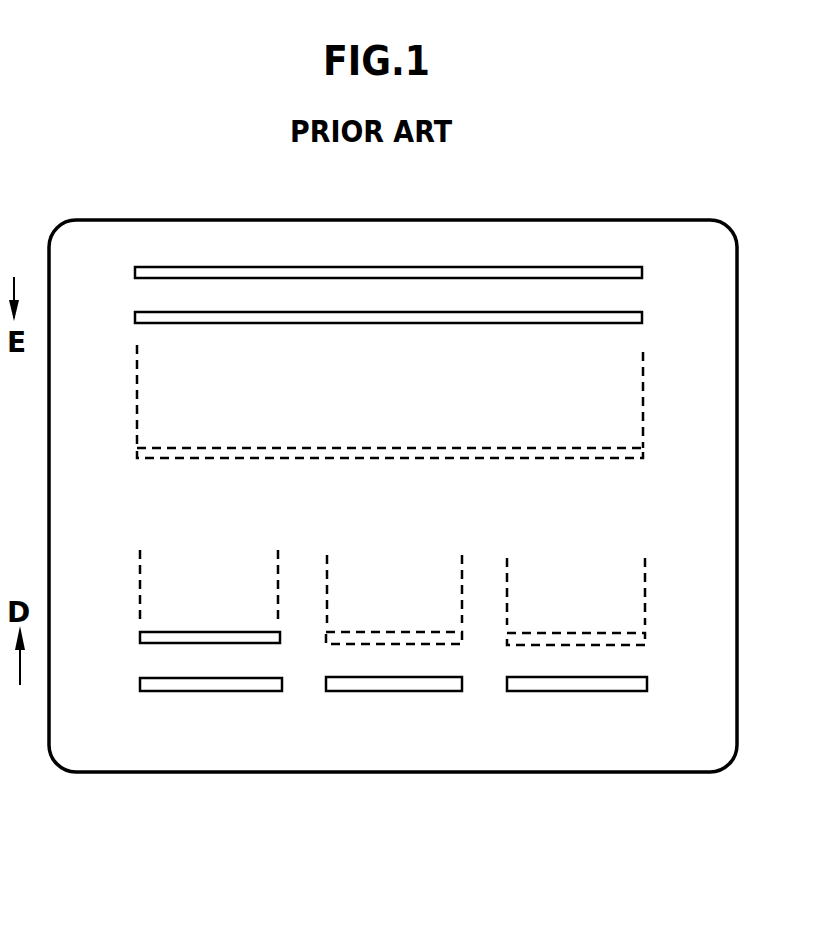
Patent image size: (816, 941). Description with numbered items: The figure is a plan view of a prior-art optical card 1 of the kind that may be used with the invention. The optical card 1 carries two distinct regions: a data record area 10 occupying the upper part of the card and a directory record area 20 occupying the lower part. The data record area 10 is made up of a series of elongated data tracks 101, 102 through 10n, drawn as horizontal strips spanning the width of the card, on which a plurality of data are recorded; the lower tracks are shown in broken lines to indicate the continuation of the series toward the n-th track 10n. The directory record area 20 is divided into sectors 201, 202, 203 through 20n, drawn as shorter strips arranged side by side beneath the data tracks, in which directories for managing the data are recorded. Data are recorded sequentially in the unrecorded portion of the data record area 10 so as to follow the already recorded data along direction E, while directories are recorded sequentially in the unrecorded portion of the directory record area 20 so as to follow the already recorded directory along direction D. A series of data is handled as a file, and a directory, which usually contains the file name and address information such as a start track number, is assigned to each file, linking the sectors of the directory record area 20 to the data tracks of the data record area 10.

The optical card 1 is at (627, 773).
The data record area 10 is at (130, 262).
The data track 101 is at (643, 272).
The data track 102 is at (643, 317).
The data track 10n is at (645, 450).
The directory record area 20 is at (658, 548).
The sector 20n is at (140, 636).
The sector 201 is at (221, 692).
The sector 202 is at (394, 693).
The sector 203 is at (578, 693).